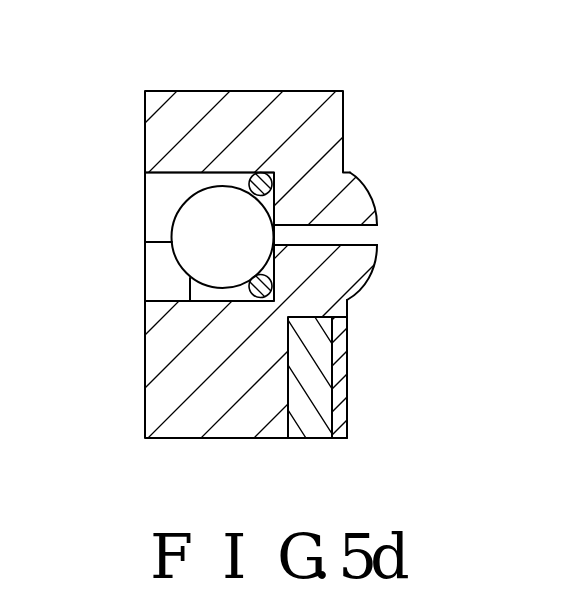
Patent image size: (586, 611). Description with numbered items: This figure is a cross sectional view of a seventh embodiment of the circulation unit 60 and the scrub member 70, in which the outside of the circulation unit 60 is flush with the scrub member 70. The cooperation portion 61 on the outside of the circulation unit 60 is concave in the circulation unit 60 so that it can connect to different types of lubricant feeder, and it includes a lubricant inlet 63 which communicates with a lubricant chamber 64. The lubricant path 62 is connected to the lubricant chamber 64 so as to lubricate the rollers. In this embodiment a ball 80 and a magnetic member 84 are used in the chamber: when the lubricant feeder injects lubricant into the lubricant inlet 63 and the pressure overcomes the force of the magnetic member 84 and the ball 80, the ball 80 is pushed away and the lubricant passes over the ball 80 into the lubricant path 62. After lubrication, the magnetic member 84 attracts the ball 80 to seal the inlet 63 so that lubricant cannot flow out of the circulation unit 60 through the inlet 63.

The circulation unit 60 is at (212, 90).
The cooperation portion 61 is at (362, 185).
The lubricant path 62 is at (172, 277).
The lubricant inlet 63 is at (358, 238).
The lubricant chamber 64 is at (167, 197).
The scrub member 70 is at (347, 370).
The ball 80 is at (185, 230).
The magnetic member 84 is at (258, 173).